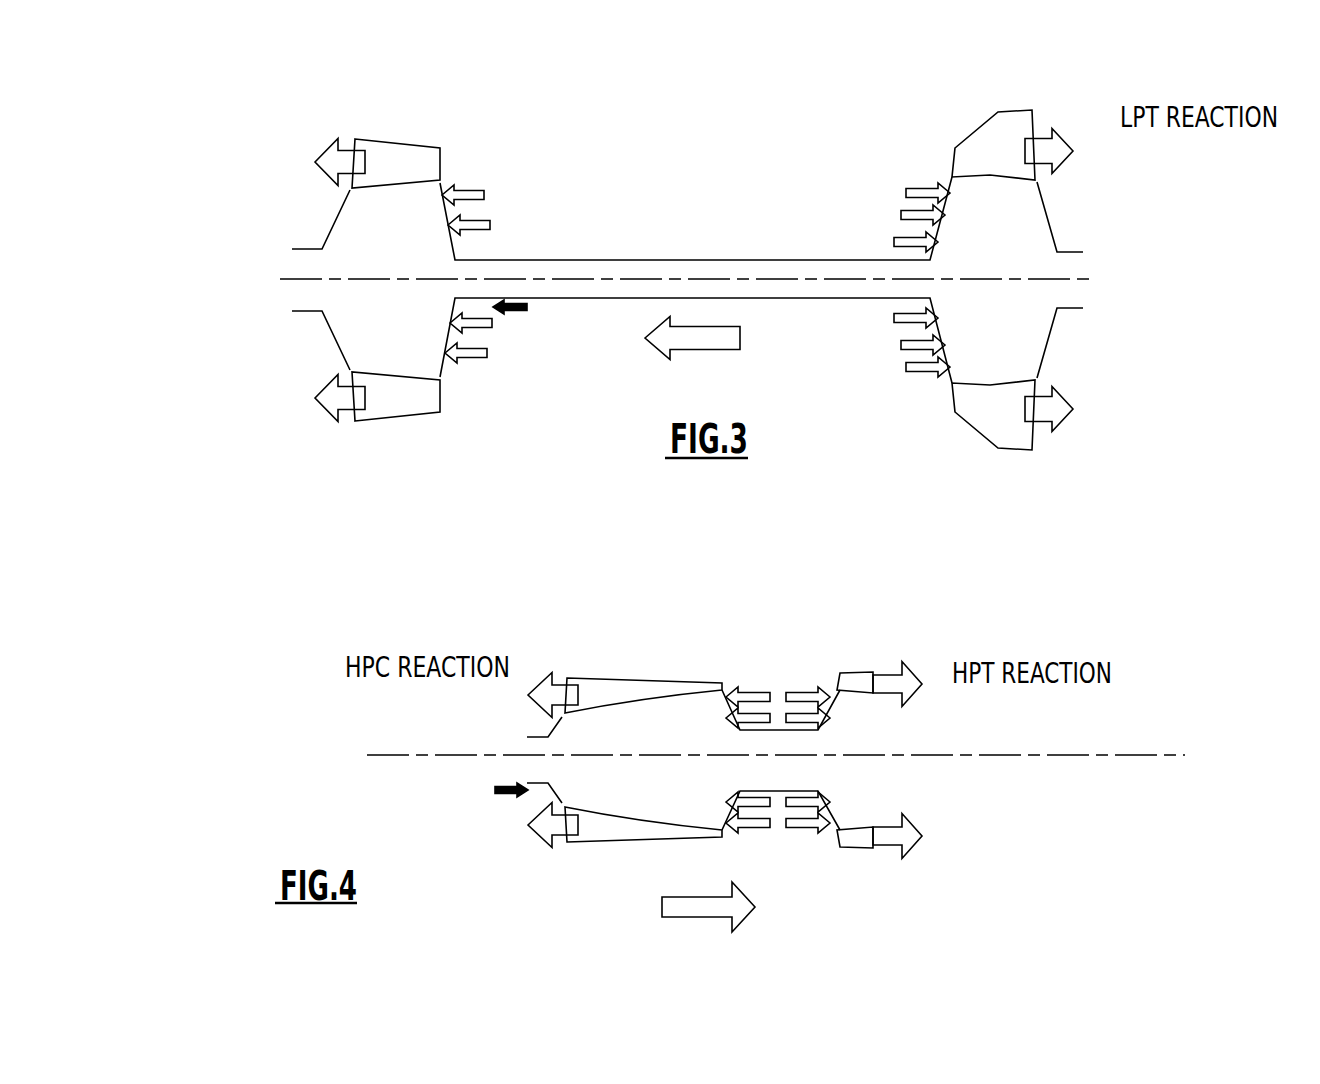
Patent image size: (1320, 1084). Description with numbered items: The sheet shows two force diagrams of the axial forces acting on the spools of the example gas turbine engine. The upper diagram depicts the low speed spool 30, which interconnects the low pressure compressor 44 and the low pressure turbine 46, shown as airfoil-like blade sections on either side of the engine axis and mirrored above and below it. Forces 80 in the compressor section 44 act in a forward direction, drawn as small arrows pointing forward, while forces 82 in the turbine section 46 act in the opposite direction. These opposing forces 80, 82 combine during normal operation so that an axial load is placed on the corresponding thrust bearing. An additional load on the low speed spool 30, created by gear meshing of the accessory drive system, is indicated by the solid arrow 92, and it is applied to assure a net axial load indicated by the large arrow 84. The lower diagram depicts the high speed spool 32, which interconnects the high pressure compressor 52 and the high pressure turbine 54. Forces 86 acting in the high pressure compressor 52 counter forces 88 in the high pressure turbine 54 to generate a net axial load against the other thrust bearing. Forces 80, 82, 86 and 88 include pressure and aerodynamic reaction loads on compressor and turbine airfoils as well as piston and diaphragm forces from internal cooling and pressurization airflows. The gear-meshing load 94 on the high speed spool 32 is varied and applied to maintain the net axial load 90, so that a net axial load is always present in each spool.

In FIG. 3, the low speed spool 30 is at (608, 280).
In FIG. 4, the high speed spool 32 is at (693, 741).
In FIG. 3, the low pressure compressor 44 is at (434, 240).
In FIG. 3, the low pressure turbine 46 is at (1060, 245).
In FIG. 4, the high pressure compressor 52 is at (601, 660).
In FIG. 4, the high pressure turbine 54 is at (895, 637).
In FIG. 3, the forces in the compressor section 80 is at (522, 207).
In FIG. 3, the forces in the turbine section 82 is at (880, 220).
In FIG. 3, the net axial load 84 is at (700, 341).
In FIG. 4, the forces acting in the high pressure compressor 86 is at (744, 668).
In FIG. 4, the forces in the high pressure turbine 88 is at (790, 675).
In FIG. 4, the net axial load 90 is at (702, 908).
In FIG. 3, the additional load on the low speed spool 92 is at (533, 322).
In FIG. 4, the additional load on the high speed spool 94 is at (482, 807).